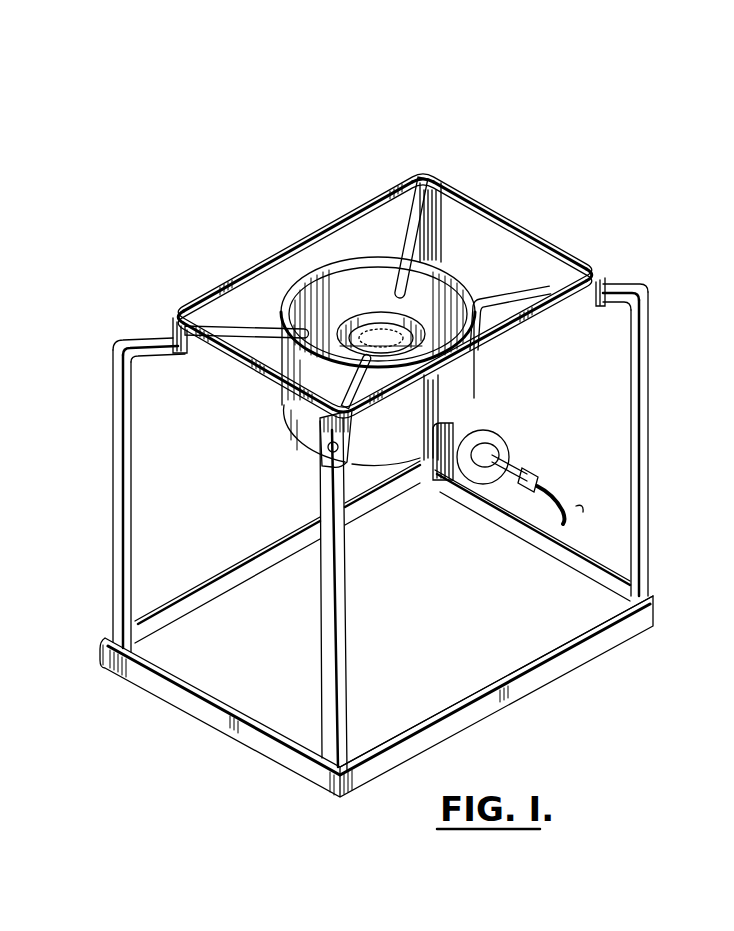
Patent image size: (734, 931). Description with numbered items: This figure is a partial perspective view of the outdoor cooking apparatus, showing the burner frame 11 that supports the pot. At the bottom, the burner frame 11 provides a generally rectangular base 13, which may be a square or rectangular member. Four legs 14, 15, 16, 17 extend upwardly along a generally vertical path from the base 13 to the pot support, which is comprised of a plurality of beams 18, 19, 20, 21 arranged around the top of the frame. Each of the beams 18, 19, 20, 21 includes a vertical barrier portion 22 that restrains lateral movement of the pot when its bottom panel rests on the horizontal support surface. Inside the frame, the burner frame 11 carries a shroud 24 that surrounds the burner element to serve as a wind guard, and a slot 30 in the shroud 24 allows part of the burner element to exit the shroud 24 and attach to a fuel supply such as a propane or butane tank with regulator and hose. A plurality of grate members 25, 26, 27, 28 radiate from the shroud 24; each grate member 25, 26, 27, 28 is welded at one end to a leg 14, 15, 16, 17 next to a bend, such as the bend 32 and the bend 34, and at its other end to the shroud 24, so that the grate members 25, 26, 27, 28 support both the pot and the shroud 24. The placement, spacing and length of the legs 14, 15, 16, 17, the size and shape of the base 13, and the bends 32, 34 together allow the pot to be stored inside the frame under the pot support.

The burner frame 11 is at (340, 695).
The base 13 is at (597, 570).
The leg 14 is at (340, 618).
The leg 15 is at (125, 512).
The leg 16 is at (442, 248).
The leg 17 is at (645, 457).
The beam 18 is at (515, 343).
The beam 19 is at (270, 390).
The beam 20 is at (282, 248).
The beam 21 is at (493, 224).
The vertical barrier portion 22 is at (388, 192).
The shroud 24 is at (303, 448).
The grate member 25 is at (340, 468).
The grate member 26 is at (240, 325).
The grate member 27 is at (423, 170).
The grate member 28 is at (387, 316).
The slot 30 is at (437, 458).
The bend 32 is at (126, 343).
The bend 34 is at (636, 282).